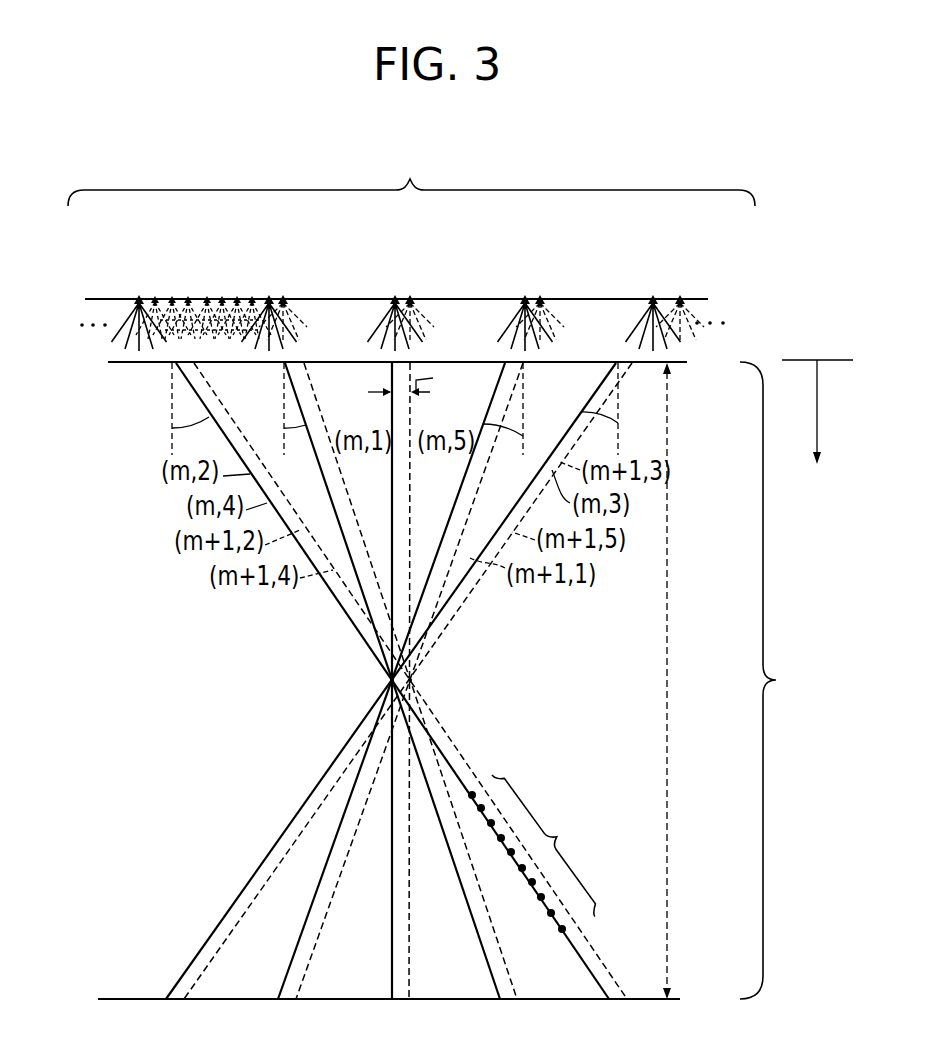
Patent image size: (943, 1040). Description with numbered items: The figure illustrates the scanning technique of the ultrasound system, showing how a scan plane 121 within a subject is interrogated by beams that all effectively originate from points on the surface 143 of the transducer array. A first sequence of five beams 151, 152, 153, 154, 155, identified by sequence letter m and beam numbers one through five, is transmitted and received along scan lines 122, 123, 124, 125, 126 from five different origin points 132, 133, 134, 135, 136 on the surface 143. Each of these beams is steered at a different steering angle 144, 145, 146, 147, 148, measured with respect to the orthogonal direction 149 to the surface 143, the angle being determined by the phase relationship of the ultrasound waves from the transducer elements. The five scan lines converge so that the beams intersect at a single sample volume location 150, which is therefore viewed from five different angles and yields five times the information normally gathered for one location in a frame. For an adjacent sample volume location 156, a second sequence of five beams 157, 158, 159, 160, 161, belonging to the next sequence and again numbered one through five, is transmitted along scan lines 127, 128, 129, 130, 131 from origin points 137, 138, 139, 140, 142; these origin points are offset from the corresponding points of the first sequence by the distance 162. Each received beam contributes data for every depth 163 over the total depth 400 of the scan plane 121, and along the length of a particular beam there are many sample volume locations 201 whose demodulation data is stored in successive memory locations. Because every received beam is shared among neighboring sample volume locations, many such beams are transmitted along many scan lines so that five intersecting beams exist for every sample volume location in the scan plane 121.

The surface of the transducer array 143 is at (411, 170).
The beam origin point 132 is at (139, 297).
The beam origin point 133 is at (269, 297).
The beam origin point 134 is at (395, 297).
The beam origin point 135 is at (525, 297).
The beam origin point 136 is at (653, 297).
The offset beam origin point 137 is at (157, 296).
The offset beam origin point 138 is at (284, 296).
The offset beam origin point 139 is at (412, 296).
The offset beam origin point 140 is at (542, 296).
The offset beam origin point 142 is at (683, 297).
The received beam of sequence m+1 157 is at (190, 296).
The ultrasound beam 151 is at (162, 335).
The ultrasound beam 152 is at (282, 337).
The ultrasound beam 153 is at (393, 343).
The ultrasound beam 154 is at (513, 343).
The ultrasound beam 155 is at (640, 333).
The received beam of sequence m+1 158 is at (298, 325).
The received beam of sequence m+1 159 is at (424, 332).
The received beam of sequence m+1 160 is at (545, 328).
The received beam of sequence m+1 161 is at (665, 318).
The steering angle 144 is at (186, 424).
The steering angle 145 is at (292, 420).
The steering angle 146 is at (360, 396).
The steering angle 147 is at (500, 426).
The steering angle 148 is at (602, 410).
The orthogonal direction 149 is at (818, 385).
The offset distance d_s 162 is at (442, 379).
The depth 163 is at (670, 660).
The total depth 400 is at (785, 680).
The scan plane 121 is at (138, 588).
The scan line (m,1) 122 is at (328, 607).
The scan line 123 is at (343, 612).
The scan line 124 is at (392, 528).
The scan line 125 is at (440, 545).
The scan line (m,5) 126 is at (485, 590).
The scan line (m+1,1) 127 is at (320, 590).
The scan line 128 is at (370, 625).
The scan line 129 is at (414, 682).
The scan line 130 is at (450, 615).
The scan line (m+1,5) 131 is at (480, 610).
The sample volume location 150 is at (388, 682).
The adjacent sample volume location 156 is at (412, 686).
The sample volume locations 201 is at (538, 849).